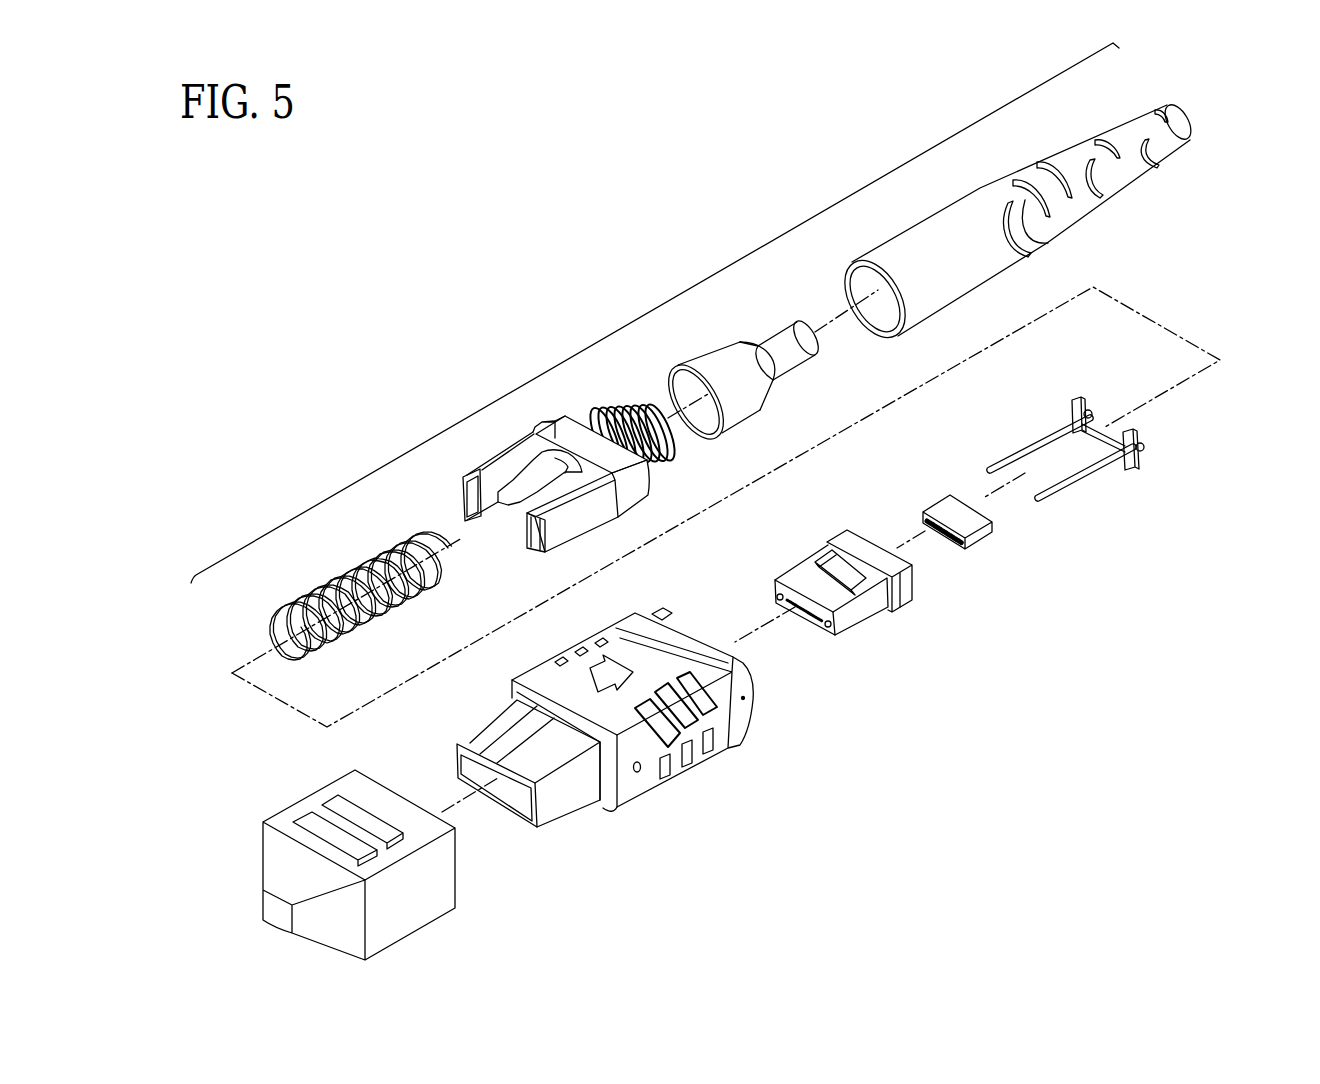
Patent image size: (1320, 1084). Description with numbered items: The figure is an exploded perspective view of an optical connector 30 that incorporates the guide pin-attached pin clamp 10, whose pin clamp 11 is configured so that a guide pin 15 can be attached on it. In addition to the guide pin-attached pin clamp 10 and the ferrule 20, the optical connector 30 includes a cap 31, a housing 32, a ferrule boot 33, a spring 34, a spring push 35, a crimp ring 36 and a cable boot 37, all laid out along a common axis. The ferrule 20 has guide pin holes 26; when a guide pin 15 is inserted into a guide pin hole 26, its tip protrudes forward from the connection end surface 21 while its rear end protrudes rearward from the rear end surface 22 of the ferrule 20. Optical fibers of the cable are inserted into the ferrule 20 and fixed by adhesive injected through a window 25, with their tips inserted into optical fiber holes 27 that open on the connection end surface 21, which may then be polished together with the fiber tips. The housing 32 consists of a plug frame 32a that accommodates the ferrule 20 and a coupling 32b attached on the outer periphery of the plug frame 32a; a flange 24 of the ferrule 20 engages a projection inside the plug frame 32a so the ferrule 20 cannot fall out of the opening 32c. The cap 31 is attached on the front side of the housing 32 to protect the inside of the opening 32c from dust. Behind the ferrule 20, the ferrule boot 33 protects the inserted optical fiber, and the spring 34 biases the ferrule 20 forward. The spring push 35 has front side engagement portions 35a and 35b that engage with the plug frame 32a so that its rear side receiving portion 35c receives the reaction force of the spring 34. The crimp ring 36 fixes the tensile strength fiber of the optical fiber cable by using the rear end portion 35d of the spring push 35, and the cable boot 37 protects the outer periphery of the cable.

The guide pin-attached pin clamp 10 is at (1093, 487).
The pin clamp 11 is at (1078, 398).
The guide pin 15 is at (1015, 453).
The ferrule 20 is at (836, 611).
The connection end surface 21 is at (815, 623).
The rear end surface 22 is at (913, 582).
The flange 24 is at (887, 615).
The window 25 is at (825, 563).
The guide pin hole 26 is at (778, 598).
The optical fiber hole 27 is at (800, 600).
The optical connector 30 is at (663, 303).
The cap 31 is at (417, 910).
The housing 32 is at (605, 769).
The plug frame 32a is at (572, 790).
The coupling 32b is at (640, 780).
The opening 32c is at (513, 795).
The ferrule boot 33 is at (977, 530).
The spring 34 is at (353, 563).
The spring push 35 is at (532, 467).
The front side engagement portion 35a is at (460, 500).
The front side engagement portion 35b is at (527, 537).
The rear side receiving portion 35c is at (557, 460).
The rear end portion 35d is at (620, 407).
The crimp ring 36 is at (708, 357).
The cable boot 37 is at (938, 229).